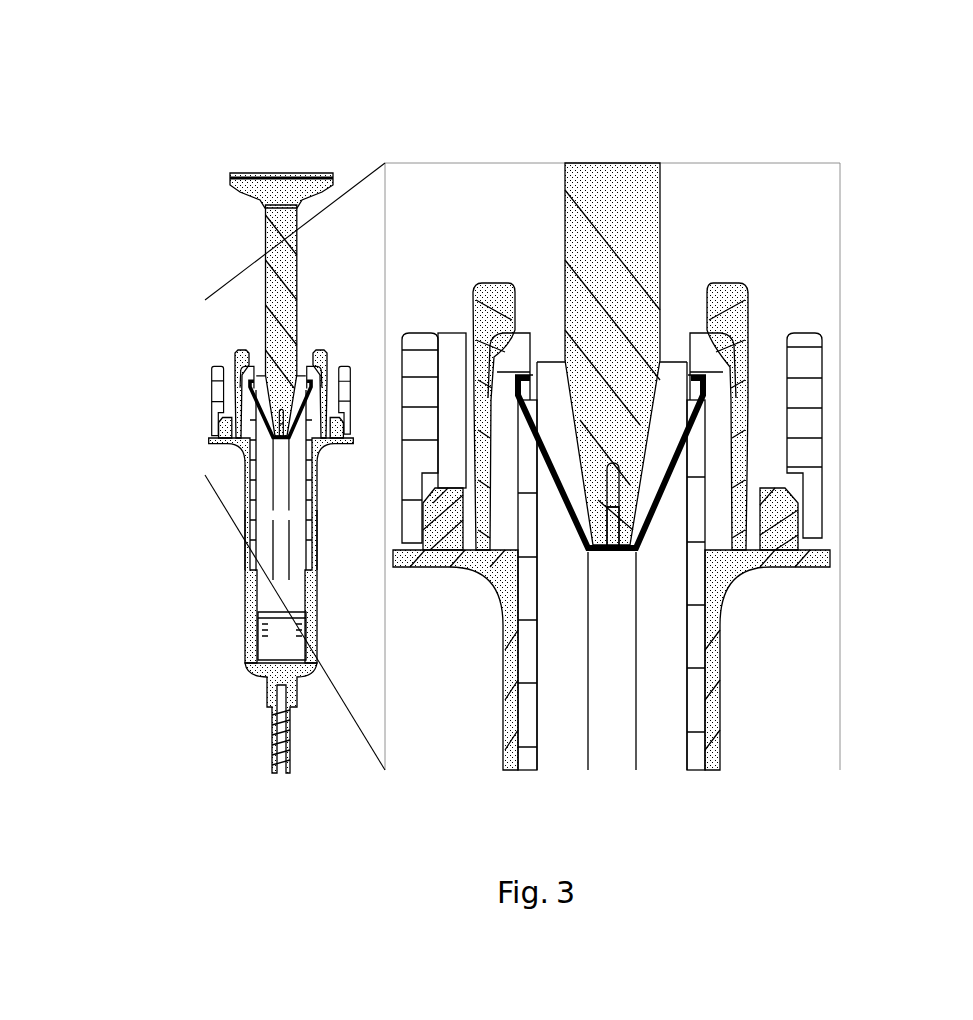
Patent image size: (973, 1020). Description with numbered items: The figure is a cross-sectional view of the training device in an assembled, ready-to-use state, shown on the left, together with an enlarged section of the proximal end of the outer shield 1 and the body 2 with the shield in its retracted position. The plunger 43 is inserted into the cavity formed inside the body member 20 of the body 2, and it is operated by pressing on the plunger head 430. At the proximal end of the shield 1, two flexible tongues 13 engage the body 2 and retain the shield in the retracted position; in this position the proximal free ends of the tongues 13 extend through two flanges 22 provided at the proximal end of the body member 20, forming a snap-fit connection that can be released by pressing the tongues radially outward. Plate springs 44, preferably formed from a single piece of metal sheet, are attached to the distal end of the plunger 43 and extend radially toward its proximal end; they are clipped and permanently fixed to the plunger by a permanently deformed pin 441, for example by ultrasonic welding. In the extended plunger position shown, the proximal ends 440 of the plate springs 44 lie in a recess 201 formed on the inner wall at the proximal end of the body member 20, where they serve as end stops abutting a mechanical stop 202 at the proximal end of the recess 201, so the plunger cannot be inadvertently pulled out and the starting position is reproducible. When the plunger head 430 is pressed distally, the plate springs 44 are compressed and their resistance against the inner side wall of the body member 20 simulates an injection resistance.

The outer shield 1 is at (243, 588).
The body 2 is at (255, 497).
The flexible tongues 13 is at (488, 246).
The body member 20 is at (697, 622).
The flanges 22 is at (810, 390).
The plunger 43 is at (272, 298).
The plunger head 430 is at (322, 182).
The plate springs 44 is at (660, 498).
The proximal ends of plate springs 440 is at (703, 383).
The recess 201 is at (705, 403).
The mechanical stop 202 is at (695, 375).
The pin 441 is at (612, 552).